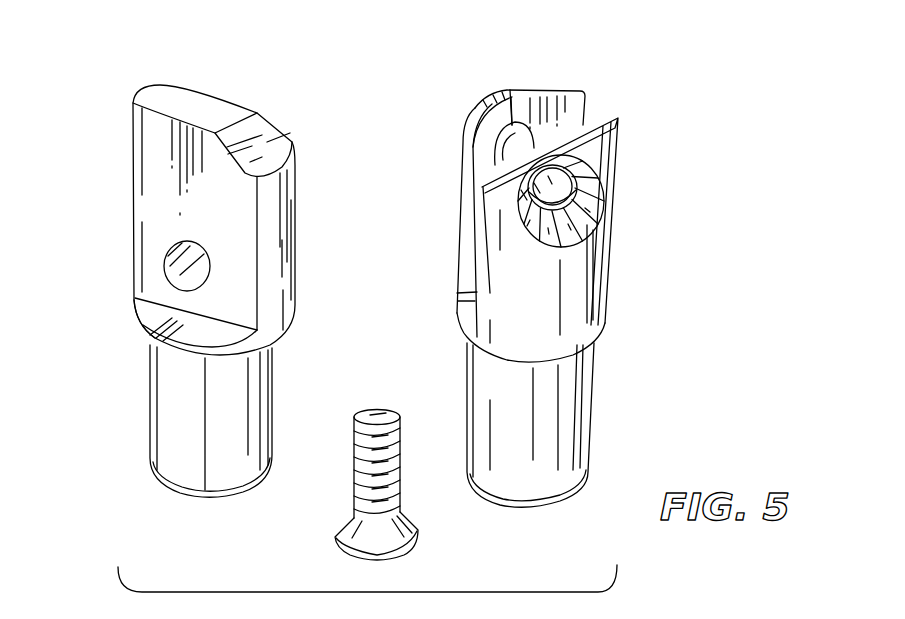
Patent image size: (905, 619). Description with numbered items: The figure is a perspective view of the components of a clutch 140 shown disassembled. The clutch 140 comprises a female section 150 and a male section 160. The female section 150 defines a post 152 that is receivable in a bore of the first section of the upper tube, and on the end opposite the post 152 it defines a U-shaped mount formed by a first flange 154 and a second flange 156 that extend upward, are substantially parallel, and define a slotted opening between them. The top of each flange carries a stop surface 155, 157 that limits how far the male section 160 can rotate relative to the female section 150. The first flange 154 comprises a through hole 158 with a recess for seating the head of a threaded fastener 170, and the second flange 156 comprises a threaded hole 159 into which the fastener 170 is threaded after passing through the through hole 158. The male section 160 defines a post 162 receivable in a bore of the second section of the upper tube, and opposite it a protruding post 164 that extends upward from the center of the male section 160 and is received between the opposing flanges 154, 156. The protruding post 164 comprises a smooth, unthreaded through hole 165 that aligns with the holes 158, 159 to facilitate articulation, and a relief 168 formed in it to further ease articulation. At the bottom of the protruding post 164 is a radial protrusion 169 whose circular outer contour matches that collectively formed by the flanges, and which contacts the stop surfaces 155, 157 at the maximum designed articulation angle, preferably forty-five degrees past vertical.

The clutch 140 is at (365, 105).
The female section 150 is at (650, 298).
The post 152 is at (566, 407).
The first flange 154 is at (620, 150).
The stop surface 155 is at (494, 196).
The second flange 156 is at (543, 90).
The stop surface 157 is at (480, 112).
The through hole 158 is at (603, 203).
The threaded hole 159 is at (511, 112).
The male section 160 is at (112, 244).
The post 162 is at (172, 420).
The protruding post 164 is at (163, 148).
The through hole 165 is at (163, 267).
The relief 168 is at (283, 133).
The radial protrusion 169 is at (150, 334).
The threaded fastener 170 is at (355, 463).